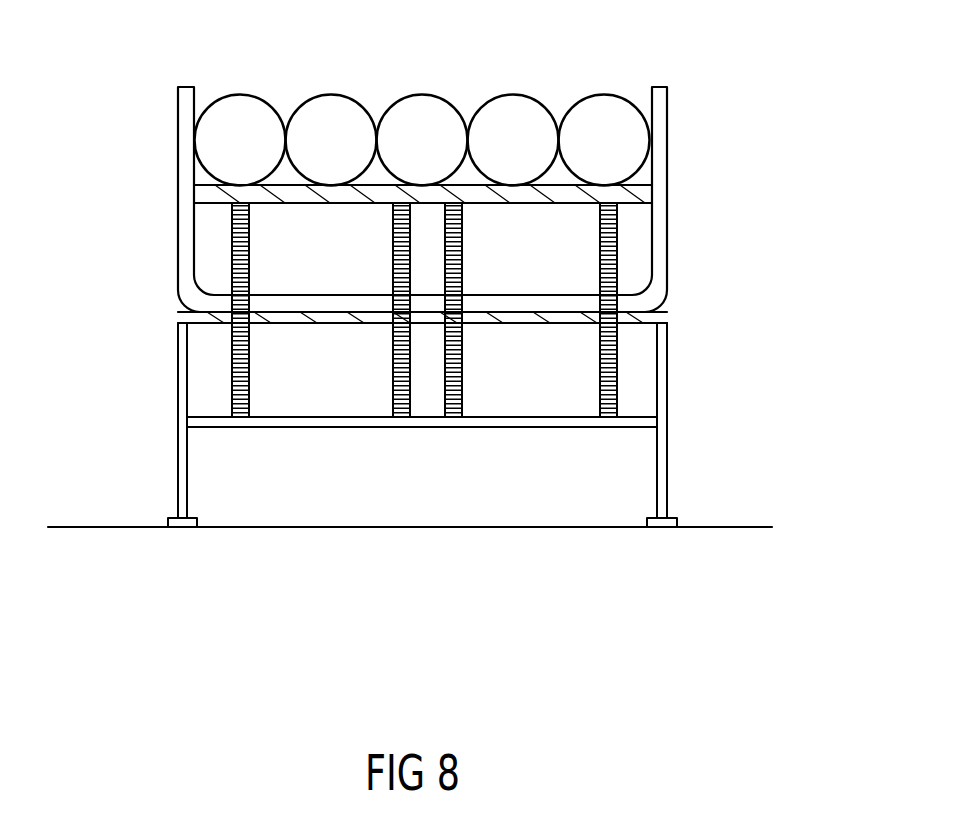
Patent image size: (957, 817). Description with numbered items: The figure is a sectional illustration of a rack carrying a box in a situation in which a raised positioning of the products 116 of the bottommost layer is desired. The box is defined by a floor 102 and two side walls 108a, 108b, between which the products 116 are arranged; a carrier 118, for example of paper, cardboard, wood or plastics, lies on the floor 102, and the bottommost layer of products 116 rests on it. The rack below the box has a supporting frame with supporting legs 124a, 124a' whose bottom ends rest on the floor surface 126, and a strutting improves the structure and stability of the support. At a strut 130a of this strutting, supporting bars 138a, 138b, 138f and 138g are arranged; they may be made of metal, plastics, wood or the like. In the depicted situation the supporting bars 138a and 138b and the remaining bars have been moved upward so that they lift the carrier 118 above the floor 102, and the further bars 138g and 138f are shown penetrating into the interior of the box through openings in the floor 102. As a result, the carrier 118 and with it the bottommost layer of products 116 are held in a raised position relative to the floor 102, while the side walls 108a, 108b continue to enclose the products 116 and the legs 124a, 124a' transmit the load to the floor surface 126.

The floor 102 is at (313, 300).
The side wall 108a is at (668, 112).
The side wall 108b is at (187, 119).
The products 116 is at (331, 120).
The carrier 118 is at (528, 197).
The supporting leg 124a is at (709, 425).
The supporting leg 124a' is at (133, 425).
The floor surface 126 is at (725, 528).
The strut 130a is at (553, 423).
The supporting bar 138a is at (232, 248).
The supporting bar 138b is at (600, 273).
The supporting bar 138f is at (393, 407).
The supporting bar 138g is at (465, 387).